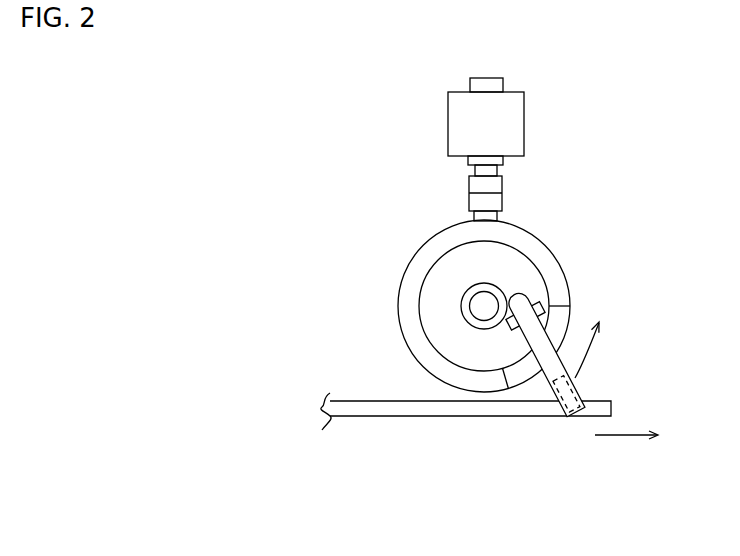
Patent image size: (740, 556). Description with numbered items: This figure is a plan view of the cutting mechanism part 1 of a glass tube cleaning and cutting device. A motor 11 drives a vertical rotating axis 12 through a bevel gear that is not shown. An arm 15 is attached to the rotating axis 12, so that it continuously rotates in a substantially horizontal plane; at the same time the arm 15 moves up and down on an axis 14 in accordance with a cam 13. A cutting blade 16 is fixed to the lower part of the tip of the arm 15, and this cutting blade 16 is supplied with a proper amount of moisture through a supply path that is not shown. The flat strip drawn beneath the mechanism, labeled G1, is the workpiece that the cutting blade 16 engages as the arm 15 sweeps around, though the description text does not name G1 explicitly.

The cutting mechanism part 1 is at (547, 102).
The motor 11 is at (460, 122).
The rotating axis 12 is at (477, 288).
The cam 13 is at (543, 258).
The axis 14 is at (506, 332).
The arm 15 is at (547, 378).
The cutting blade 16 is at (576, 418).
The glass substrate G1 is at (350, 416).